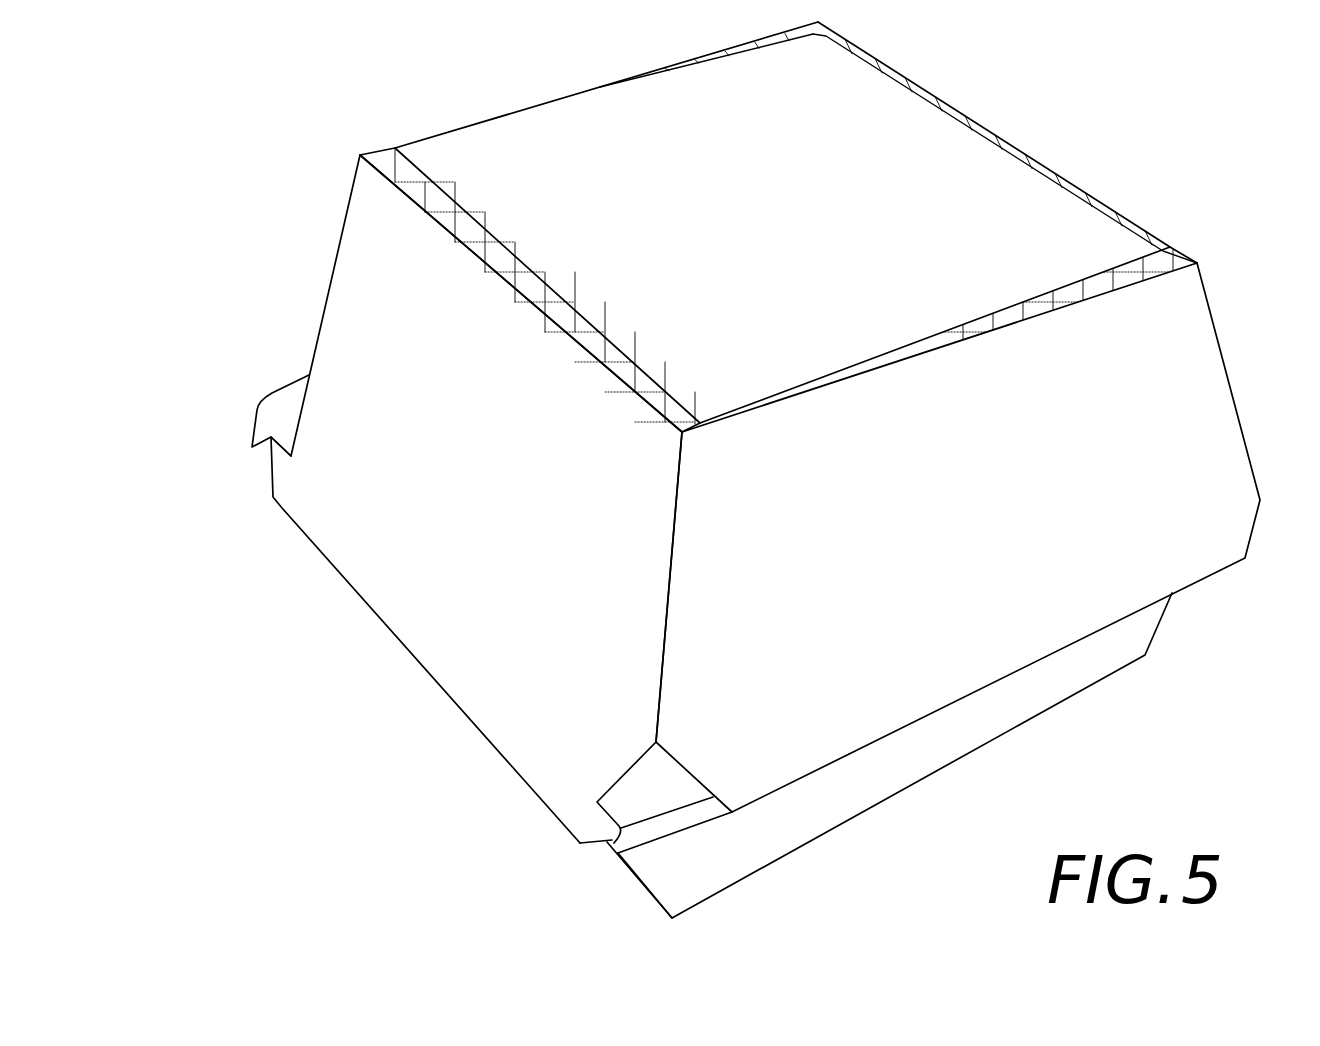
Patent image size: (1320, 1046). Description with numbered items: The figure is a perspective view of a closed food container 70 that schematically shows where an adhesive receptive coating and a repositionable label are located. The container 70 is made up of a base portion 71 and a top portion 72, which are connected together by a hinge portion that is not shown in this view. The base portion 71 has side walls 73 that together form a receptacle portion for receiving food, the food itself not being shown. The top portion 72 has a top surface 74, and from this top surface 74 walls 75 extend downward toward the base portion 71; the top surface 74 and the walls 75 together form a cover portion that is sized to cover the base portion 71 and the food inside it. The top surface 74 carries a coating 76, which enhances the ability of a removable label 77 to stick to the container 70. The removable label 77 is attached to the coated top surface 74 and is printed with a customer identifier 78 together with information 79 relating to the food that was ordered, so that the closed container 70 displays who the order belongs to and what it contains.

The food container 70 is at (233, 169).
The base portion 71 is at (1160, 627).
The top portion 72 is at (1213, 308).
The side walls 73 is at (1042, 698).
The top surface 74 is at (1168, 258).
The walls 75 is at (1180, 374).
The coating 76 is at (527, 283).
The removable label 77 is at (843, 70).
The customer identifier 78 is at (613, 110).
The information 79 is at (985, 193).